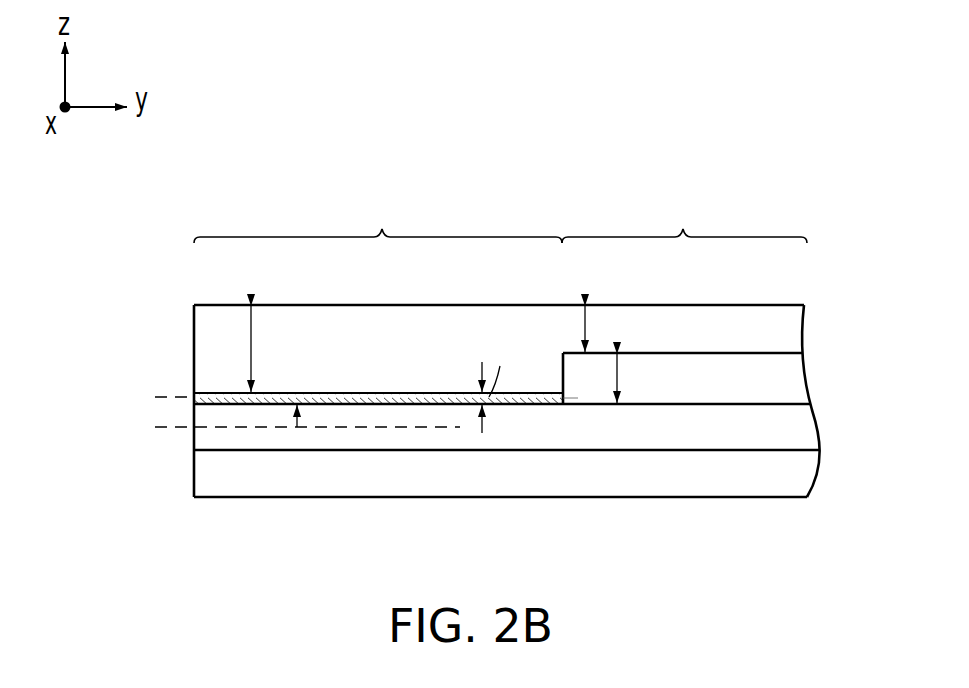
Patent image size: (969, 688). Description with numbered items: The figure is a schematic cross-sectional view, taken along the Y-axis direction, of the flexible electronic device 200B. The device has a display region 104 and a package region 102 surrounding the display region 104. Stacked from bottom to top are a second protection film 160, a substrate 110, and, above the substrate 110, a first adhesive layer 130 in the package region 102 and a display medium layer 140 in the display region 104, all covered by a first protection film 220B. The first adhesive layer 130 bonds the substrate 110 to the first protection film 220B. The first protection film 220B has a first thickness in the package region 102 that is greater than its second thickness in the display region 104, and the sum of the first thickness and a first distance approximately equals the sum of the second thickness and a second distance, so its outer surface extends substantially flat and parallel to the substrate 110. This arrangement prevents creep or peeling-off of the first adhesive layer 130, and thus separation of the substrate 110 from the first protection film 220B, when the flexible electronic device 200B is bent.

The package region 102 is at (378, 216).
The display region 104 is at (684, 216).
The substrate 110 is at (787, 431).
The first adhesive layer 130 is at (224, 400).
The display medium layer 140 is at (777, 374).
The second protection film 160 is at (784, 480).
The first protection film 220B is at (777, 332).
The flexible electronic device 200B is at (474, 443).